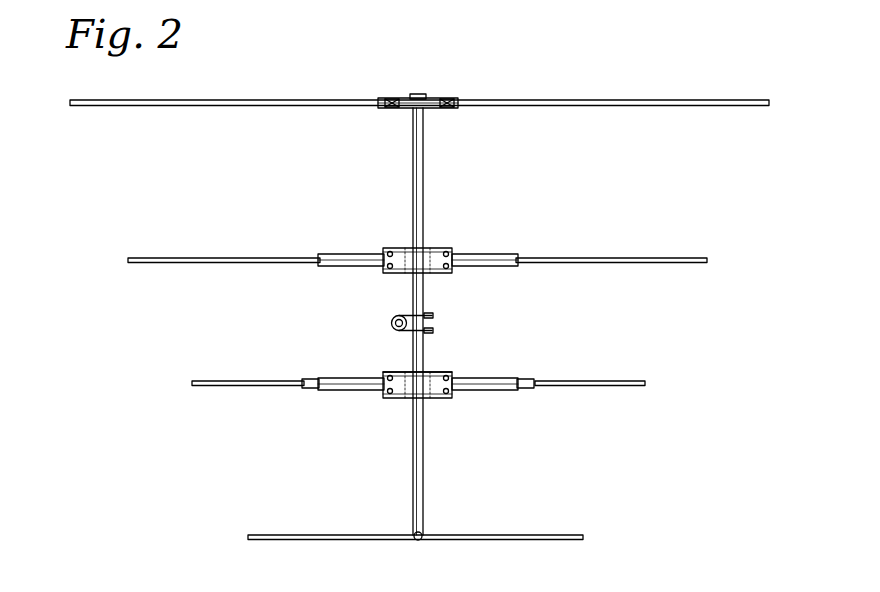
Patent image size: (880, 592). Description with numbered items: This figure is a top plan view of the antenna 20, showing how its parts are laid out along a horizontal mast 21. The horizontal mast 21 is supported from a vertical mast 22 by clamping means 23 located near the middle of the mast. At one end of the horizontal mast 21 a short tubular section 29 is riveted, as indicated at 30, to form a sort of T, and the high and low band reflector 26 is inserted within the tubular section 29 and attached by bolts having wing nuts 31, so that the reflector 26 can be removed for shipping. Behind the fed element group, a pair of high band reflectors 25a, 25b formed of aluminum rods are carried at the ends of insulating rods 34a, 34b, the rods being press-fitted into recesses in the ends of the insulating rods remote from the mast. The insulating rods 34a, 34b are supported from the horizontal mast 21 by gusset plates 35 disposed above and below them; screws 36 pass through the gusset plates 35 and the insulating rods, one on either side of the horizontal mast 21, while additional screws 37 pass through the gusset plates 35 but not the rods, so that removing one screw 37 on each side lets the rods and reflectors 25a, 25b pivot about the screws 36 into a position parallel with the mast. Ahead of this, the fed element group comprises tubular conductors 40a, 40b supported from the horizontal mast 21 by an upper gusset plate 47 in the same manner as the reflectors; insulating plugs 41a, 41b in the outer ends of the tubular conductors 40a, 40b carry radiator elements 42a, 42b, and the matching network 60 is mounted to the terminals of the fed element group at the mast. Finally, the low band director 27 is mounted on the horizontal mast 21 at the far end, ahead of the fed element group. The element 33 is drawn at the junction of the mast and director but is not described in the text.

The antenna 20 is at (289, 582).
The horizontal mast 21 is at (424, 469).
The vertical mast 22 is at (392, 326).
The clamping means 23 is at (394, 317).
The high band reflector 25a is at (666, 257).
The high band reflector 25b is at (186, 258).
The high and low band reflector 26 is at (530, 100).
The low band director 27 is at (500, 535).
The tubular section 29 is at (445, 108).
The rivet 30 is at (424, 97).
The wing nuts 31 is at (390, 98).
The base fitting 33 is at (421, 540).
The insulating rod 34a is at (505, 256).
The insulating rod 34b is at (338, 255).
The gusset plates 35 is at (440, 273).
The screws 36 is at (399, 256).
The screws 37 is at (386, 264).
The tubular conductor 40a is at (500, 380).
The tubular conductor 40b is at (328, 360).
The insulating plug 41a is at (528, 389).
The insulating plug 41b is at (310, 389).
The radiator element 42a is at (614, 381).
The radiator element 42b is at (213, 380).
The upper gusset plate 47 is at (428, 373).
The matching network 60 is at (397, 398).